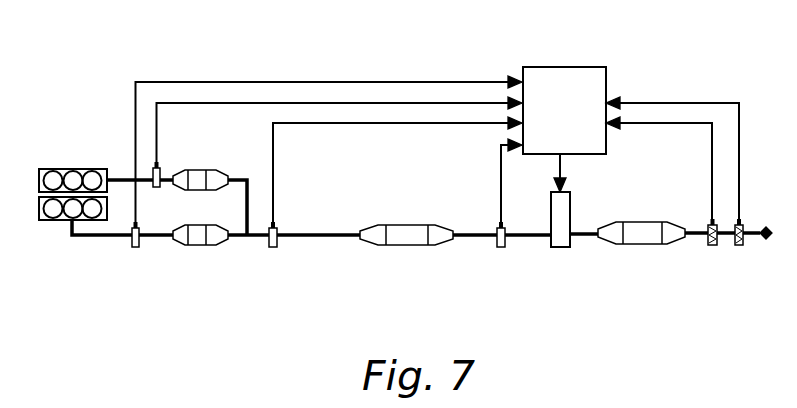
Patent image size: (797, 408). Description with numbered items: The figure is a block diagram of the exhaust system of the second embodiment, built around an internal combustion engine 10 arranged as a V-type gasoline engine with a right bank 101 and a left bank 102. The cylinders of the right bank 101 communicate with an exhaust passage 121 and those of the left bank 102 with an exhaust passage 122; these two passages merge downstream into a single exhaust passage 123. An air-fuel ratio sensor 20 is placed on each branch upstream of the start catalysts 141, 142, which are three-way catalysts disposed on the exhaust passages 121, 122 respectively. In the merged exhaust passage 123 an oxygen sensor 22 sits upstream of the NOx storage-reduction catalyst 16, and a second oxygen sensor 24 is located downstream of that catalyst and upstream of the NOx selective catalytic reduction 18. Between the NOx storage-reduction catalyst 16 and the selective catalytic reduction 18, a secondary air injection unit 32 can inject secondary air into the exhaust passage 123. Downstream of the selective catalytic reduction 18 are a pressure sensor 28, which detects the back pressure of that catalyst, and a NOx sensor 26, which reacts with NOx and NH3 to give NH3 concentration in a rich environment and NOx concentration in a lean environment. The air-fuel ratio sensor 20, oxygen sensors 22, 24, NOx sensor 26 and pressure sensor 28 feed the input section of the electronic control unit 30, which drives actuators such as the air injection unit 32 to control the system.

The internal combustion engine 10 is at (60, 183).
The right bank 101 is at (40, 221).
The left bank 102 is at (40, 169).
The exhaust passage 121 is at (88, 238).
The exhaust passage 122 is at (113, 178).
The exhaust passage 123 is at (348, 237).
The start catalyst 141 is at (213, 246).
The start catalyst 142 is at (207, 170).
The NOx storage-reduction catalyst 16 is at (407, 232).
The NOx selective catalytic reduction 18 is at (637, 222).
The air-fuel ratio sensor 20 is at (160, 186).
The oxygen sensor 22 is at (276, 248).
The oxygen sensor 24 is at (498, 248).
The NOx sensor 26 is at (744, 245).
The pressure sensor 28 is at (708, 245).
The electronic control unit 30 is at (577, 67).
The secondary air injection unit 32 is at (551, 243).